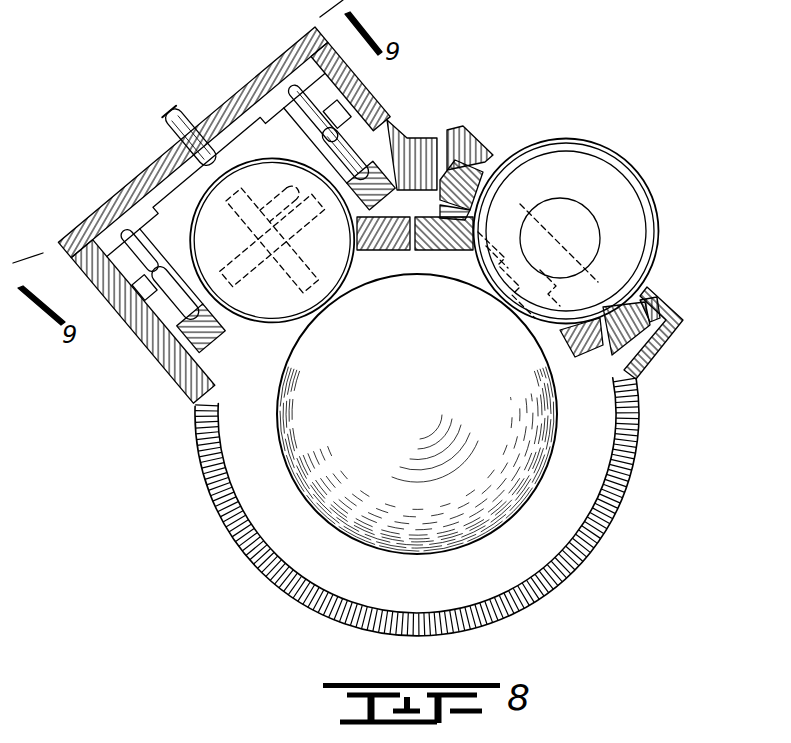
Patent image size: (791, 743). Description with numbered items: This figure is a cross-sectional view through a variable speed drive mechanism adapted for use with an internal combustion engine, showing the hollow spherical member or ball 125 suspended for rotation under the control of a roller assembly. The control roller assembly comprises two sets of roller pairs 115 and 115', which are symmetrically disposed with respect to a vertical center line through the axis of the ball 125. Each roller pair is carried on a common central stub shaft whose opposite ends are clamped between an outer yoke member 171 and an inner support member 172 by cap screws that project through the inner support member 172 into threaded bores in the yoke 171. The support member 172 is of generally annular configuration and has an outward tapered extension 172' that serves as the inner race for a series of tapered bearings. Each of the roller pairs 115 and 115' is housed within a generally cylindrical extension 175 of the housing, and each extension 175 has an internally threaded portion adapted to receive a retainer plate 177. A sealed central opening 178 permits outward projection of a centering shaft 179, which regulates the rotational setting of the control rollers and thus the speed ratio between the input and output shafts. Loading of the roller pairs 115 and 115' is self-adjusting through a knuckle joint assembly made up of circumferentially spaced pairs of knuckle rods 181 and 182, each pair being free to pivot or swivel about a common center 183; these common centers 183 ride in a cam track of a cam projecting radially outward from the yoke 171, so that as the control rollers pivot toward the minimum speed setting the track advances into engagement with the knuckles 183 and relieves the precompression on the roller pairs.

The roller pair 115 is at (239, 240).
The roller pair 115' is at (597, 231).
The hollow spherical member or ball 125 is at (280, 447).
The outer yoke member 171 is at (246, 88).
The inner support member 172 is at (610, 346).
The outward tapered extension 172' is at (189, 303).
The cylindrical extension 175 is at (150, 352).
The retainer plate 177 is at (100, 216).
The sealed central opening 178 is at (181, 134).
The centering shaft 179 is at (180, 108).
The knuckle rod 181 is at (302, 103).
The knuckle rod 182 is at (342, 128).
The common center 183 is at (340, 114).